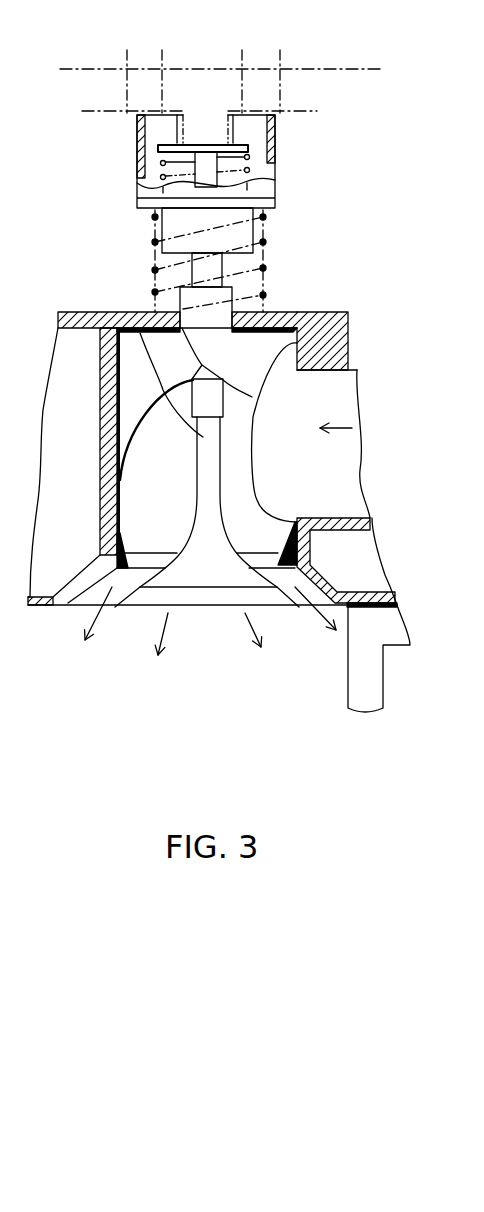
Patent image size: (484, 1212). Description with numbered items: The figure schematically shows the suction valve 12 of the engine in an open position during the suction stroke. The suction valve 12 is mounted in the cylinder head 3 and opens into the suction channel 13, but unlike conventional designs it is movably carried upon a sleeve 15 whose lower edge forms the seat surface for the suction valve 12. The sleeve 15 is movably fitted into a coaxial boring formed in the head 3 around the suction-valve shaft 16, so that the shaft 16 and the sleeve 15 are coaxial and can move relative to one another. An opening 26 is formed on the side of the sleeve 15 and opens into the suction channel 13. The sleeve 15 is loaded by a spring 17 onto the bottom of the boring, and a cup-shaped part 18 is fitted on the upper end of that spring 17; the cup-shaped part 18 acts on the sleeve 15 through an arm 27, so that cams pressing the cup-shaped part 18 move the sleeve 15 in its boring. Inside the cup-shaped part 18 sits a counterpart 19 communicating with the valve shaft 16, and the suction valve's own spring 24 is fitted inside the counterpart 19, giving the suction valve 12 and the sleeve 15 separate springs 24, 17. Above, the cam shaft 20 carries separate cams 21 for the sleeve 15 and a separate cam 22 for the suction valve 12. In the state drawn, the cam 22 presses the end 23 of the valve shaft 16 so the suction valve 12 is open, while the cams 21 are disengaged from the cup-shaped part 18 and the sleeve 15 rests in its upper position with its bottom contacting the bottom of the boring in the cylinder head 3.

The cylinder head 3 is at (348, 325).
The suction valve 12 is at (207, 597).
The suction channel 13 is at (348, 443).
The sleeve 15 is at (113, 552).
The suction-valve shaft 16 is at (135, 310).
The spring 17 is at (270, 269).
The cup-shaped part 18 is at (263, 185).
The counterpart 19 is at (240, 232).
The cam shaft 20 is at (100, 68).
The cams 21 is at (310, 90).
The cam 22 is at (217, 134).
The end of the valve shaft 23 is at (165, 140).
The spring 24 is at (160, 178).
The opening 26 is at (318, 311).
The arm 27 is at (152, 283).